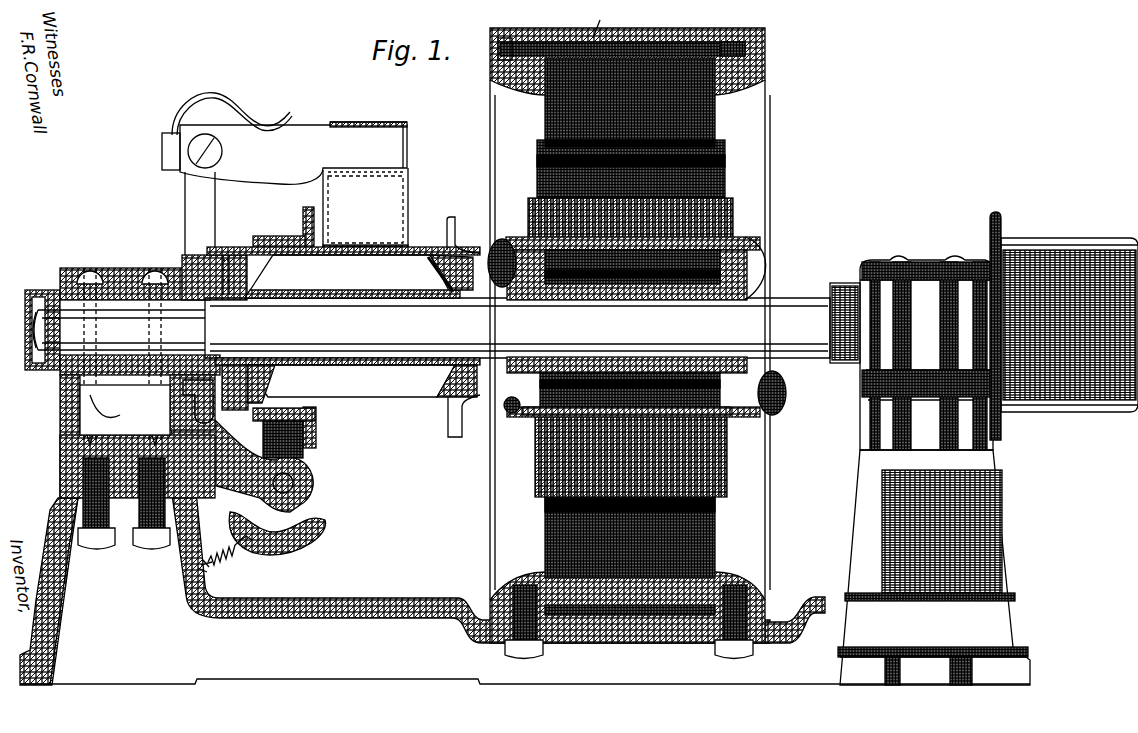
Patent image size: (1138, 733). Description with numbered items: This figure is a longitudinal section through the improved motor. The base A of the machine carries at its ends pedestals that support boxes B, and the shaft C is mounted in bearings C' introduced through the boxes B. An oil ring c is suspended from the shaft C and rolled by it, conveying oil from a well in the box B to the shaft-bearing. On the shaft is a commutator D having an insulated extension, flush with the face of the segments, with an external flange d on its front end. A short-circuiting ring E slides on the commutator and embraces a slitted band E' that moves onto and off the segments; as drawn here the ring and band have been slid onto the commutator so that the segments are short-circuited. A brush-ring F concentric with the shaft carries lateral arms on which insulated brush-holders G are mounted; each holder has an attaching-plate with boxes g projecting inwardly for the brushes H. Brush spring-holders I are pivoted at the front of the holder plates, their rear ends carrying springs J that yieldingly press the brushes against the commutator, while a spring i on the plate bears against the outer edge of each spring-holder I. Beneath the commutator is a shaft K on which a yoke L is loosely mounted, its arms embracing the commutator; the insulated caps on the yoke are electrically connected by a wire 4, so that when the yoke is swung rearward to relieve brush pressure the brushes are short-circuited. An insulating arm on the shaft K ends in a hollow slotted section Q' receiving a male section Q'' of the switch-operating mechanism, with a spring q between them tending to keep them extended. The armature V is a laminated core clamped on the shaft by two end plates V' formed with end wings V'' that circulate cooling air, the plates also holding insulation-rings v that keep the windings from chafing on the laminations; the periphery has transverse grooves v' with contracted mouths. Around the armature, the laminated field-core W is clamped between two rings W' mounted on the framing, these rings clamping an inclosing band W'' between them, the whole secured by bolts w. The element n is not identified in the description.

The base A is at (525, 542).
The box B is at (70, 410).
The wire 4 is at (124, 396).
The shaft C is at (432, 328).
The bearing C' is at (439, 343).
The oil ring c is at (125, 410).
The brush-ring F is at (188, 412).
The spring i is at (228, 112).
The brush spring-holder I is at (293, 188).
The plate strip n is at (376, 122).
The brush-holder G is at (365, 209).
The spring J is at (350, 176).
The box g is at (367, 231).
The external flange d is at (226, 245).
The short-circuiting ring E is at (312, 327).
The slitted band E' is at (265, 327).
The brush H is at (387, 250).
The commutator D is at (347, 345).
The yoke L is at (296, 556).
The shaft K is at (295, 482).
The spring q is at (226, 562).
The hollow slotted section Q' is at (250, 560).
The male section Q'' is at (178, 587).
The ring W' is at (607, 343).
The bolt w is at (635, 44).
The inclosing band W'' is at (630, 338).
The field-core W is at (606, 318).
The transverse groove v' is at (645, 169).
The armature V is at (625, 347).
The end plate V' is at (659, 335).
The end wing V'' is at (790, 391).
The insulation-ring v is at (630, 436).